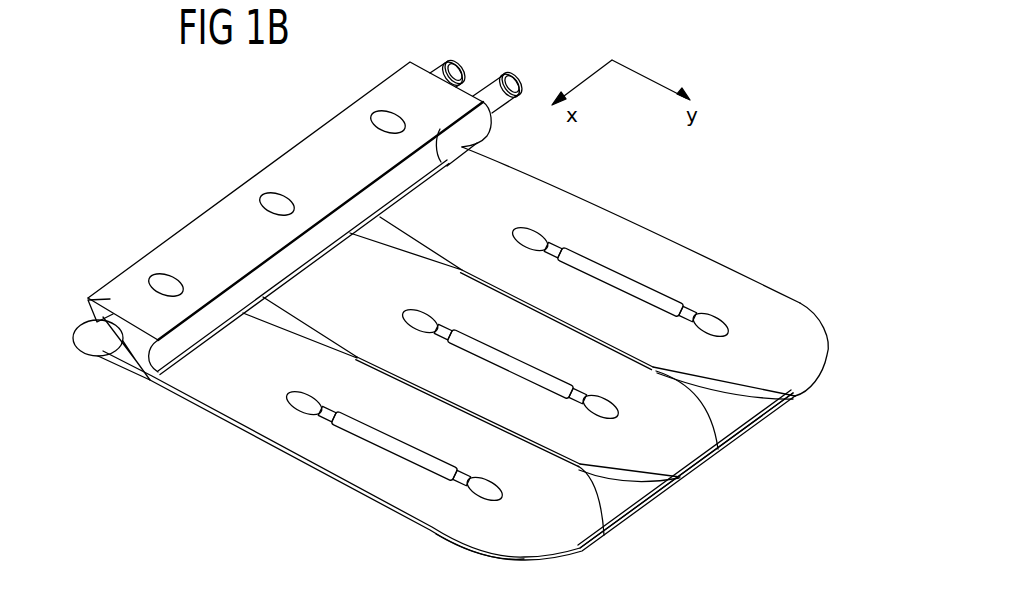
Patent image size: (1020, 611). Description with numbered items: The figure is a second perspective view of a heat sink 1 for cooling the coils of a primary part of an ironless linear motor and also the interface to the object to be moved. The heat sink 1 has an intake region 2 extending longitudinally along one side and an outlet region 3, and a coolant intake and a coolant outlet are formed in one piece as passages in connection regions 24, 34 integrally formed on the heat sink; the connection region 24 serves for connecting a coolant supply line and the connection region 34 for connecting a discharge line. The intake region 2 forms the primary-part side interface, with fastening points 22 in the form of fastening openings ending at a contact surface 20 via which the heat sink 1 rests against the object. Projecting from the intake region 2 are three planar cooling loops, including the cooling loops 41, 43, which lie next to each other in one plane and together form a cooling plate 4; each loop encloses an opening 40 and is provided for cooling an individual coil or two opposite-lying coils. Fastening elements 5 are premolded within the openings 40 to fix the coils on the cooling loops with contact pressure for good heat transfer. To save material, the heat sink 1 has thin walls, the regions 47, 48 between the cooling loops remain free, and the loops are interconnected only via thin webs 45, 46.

The heat sink 1 is at (702, 537).
The intake region 2 is at (100, 295).
The outlet region 3 is at (103, 340).
The cooling plate 4 is at (663, 231).
The fastening element 5 is at (333, 423).
The contact surface 20 is at (201, 242).
The fastening point 22 is at (273, 197).
The connection region 24 is at (512, 77).
The connection region 34 is at (457, 60).
The opening 40 is at (603, 280).
The cooling loop 41 is at (806, 344).
The cooling loop 43 is at (484, 524).
The web 45 is at (774, 414).
The web 46 is at (355, 358).
The free region 47 is at (733, 420).
The free region 48 is at (283, 317).